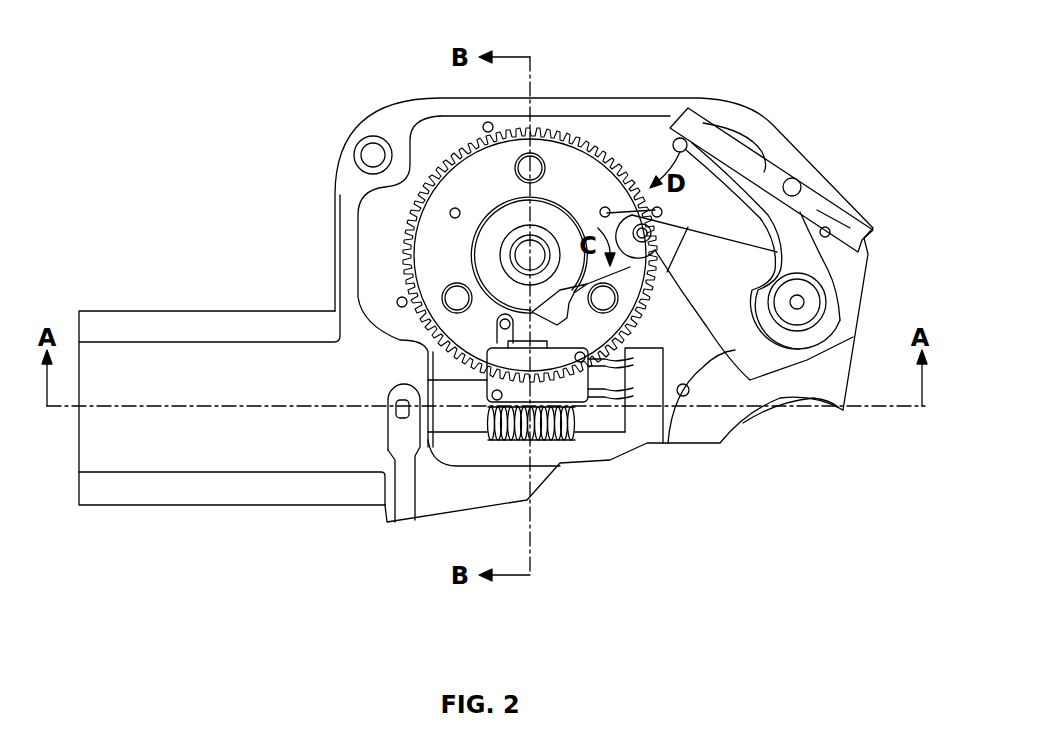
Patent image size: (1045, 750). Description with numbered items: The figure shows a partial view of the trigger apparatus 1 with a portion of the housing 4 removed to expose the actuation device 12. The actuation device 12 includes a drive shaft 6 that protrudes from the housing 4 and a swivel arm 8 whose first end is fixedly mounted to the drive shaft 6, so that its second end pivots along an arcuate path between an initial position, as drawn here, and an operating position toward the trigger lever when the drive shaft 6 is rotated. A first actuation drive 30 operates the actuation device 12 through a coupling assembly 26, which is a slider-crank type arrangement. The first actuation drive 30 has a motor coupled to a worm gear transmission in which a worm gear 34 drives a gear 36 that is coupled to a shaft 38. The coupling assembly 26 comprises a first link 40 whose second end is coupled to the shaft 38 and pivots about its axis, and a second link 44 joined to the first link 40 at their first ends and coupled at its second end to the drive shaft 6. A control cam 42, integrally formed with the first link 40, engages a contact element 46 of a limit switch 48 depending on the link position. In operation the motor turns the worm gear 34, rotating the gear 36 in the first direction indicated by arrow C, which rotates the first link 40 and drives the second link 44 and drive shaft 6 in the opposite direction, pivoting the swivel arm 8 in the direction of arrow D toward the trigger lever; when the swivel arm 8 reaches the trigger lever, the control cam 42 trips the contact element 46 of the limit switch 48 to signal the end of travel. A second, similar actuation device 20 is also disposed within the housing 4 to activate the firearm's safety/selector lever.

The trigger apparatus 1 is at (325, 95).
The housing 4 is at (397, 118).
The first link 40 is at (525, 215).
The control cam 42 is at (562, 305).
The actuation device 12 is at (633, 135).
The swivel arm 8 is at (710, 140).
The drive shaft 6 is at (797, 285).
The first actuation drive 30 is at (392, 207).
The gear 36 is at (437, 265).
The shaft 38 is at (527, 255).
The contact element 46 is at (497, 328).
The limit switch 48 is at (517, 395).
The worm gear 34 is at (583, 418).
The coupling assembly 26 is at (670, 325).
The second link 44 is at (700, 270).
The actuation device 20 is at (832, 385).